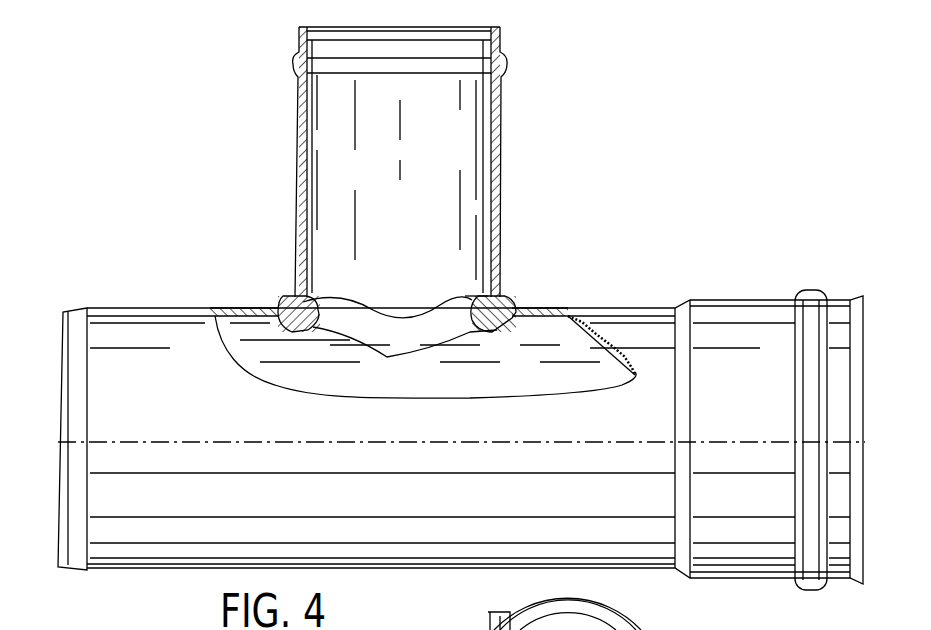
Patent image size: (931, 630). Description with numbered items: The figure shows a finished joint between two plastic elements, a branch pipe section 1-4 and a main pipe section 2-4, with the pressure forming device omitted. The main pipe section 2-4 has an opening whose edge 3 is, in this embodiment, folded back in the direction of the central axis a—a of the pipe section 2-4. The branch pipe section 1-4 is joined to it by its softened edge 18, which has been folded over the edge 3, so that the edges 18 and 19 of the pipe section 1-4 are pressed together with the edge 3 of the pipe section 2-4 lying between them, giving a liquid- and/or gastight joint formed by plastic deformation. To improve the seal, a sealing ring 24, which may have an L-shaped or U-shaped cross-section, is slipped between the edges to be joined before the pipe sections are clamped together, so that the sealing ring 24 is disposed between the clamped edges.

The pipe section 1-4 is at (501, 177).
The pipe section 2-4 is at (722, 316).
The edge 18 is at (500, 327).
The edge 3 is at (503, 299).
The sealing ring 24 is at (318, 297).
The edge 19 is at (470, 297).